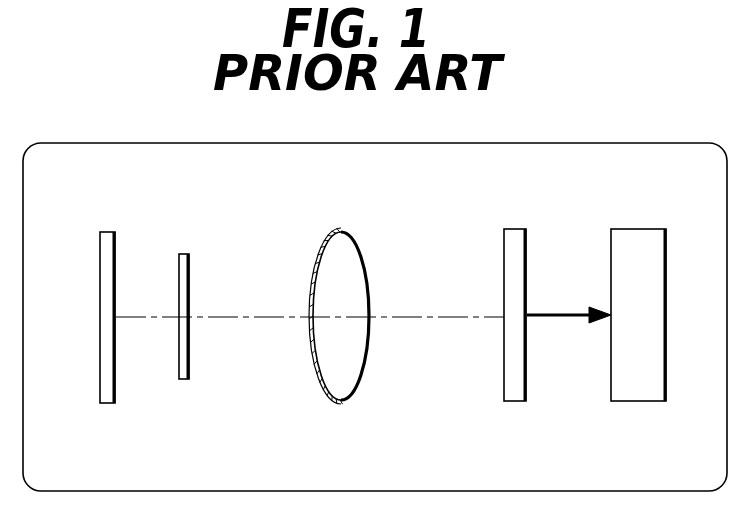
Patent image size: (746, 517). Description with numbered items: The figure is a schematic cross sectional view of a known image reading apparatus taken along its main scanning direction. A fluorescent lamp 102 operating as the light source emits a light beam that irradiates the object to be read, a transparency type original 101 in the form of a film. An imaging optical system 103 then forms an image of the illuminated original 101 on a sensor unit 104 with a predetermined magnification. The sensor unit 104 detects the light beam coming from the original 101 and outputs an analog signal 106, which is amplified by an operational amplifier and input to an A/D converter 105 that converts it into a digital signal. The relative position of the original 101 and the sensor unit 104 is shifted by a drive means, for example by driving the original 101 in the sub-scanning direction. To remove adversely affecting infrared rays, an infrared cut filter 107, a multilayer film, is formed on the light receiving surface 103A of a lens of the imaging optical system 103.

The transparency type original 101 is at (182, 262).
The fluorescent lamp 102 is at (108, 240).
The imaging optical system 103 is at (347, 243).
The light receiving surface 103A is at (326, 370).
The sensor unit 104 is at (514, 236).
The A/D converter 105 is at (637, 236).
The analog signal 106 is at (562, 312).
The infrared cut filter 107 is at (322, 378).